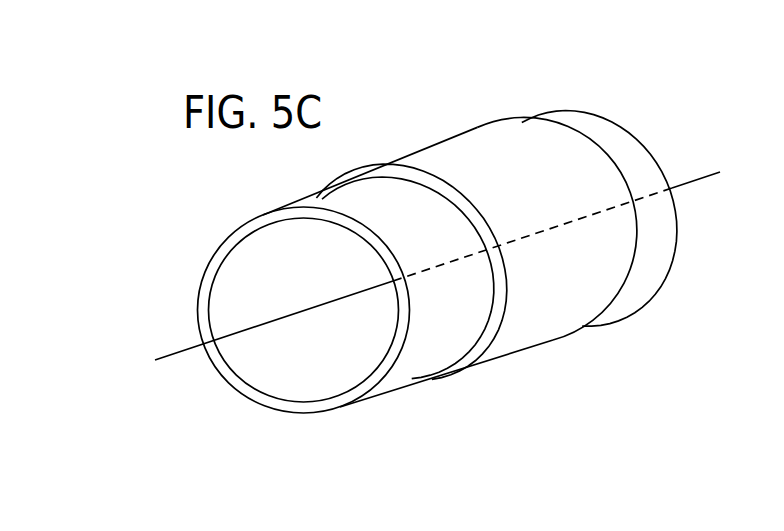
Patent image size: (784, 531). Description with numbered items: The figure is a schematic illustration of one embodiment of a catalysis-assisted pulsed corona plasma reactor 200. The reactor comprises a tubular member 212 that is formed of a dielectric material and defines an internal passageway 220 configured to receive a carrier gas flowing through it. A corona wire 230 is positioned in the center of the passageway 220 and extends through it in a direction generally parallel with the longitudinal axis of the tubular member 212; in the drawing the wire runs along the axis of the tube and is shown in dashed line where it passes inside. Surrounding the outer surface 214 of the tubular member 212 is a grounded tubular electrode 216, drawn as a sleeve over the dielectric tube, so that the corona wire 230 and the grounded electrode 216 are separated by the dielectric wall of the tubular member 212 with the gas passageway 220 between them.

The catalysis-assisted pulsed corona plasma reactor 200 is at (178, 229).
The tubular member 212 is at (655, 148).
The outer surface 214 is at (593, 127).
The grounded tubular electrode 216 is at (517, 297).
The internal passageway 220 is at (270, 266).
The corona wire 230 is at (180, 352).